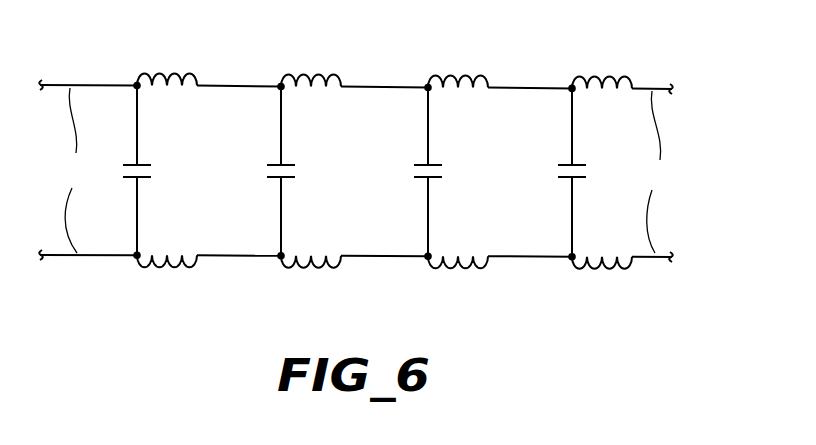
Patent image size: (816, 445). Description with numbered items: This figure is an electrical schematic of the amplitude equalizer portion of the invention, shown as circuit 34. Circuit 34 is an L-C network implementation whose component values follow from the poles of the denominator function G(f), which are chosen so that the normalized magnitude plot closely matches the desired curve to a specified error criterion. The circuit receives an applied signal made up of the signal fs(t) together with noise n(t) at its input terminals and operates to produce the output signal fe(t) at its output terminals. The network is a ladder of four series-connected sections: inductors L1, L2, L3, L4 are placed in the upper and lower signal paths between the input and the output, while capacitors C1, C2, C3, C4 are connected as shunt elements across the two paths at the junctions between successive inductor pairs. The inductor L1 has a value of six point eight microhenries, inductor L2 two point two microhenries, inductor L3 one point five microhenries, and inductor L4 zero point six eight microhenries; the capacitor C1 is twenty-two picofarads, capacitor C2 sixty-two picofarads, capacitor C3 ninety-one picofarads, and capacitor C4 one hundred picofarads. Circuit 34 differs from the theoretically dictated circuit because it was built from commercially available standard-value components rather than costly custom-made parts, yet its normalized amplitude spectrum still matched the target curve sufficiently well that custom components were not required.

The circuit 34 is at (356, 203).
The inductor L1 is at (167, 175).
The inductor L2 is at (311, 175).
The inductor L3 is at (458, 175).
The inductor L4 is at (602, 175).
The capacitor C1 is at (151, 171).
The capacitor C2 is at (294, 171).
The capacitor C3 is at (440, 171).
The capacitor C4 is at (585, 171).